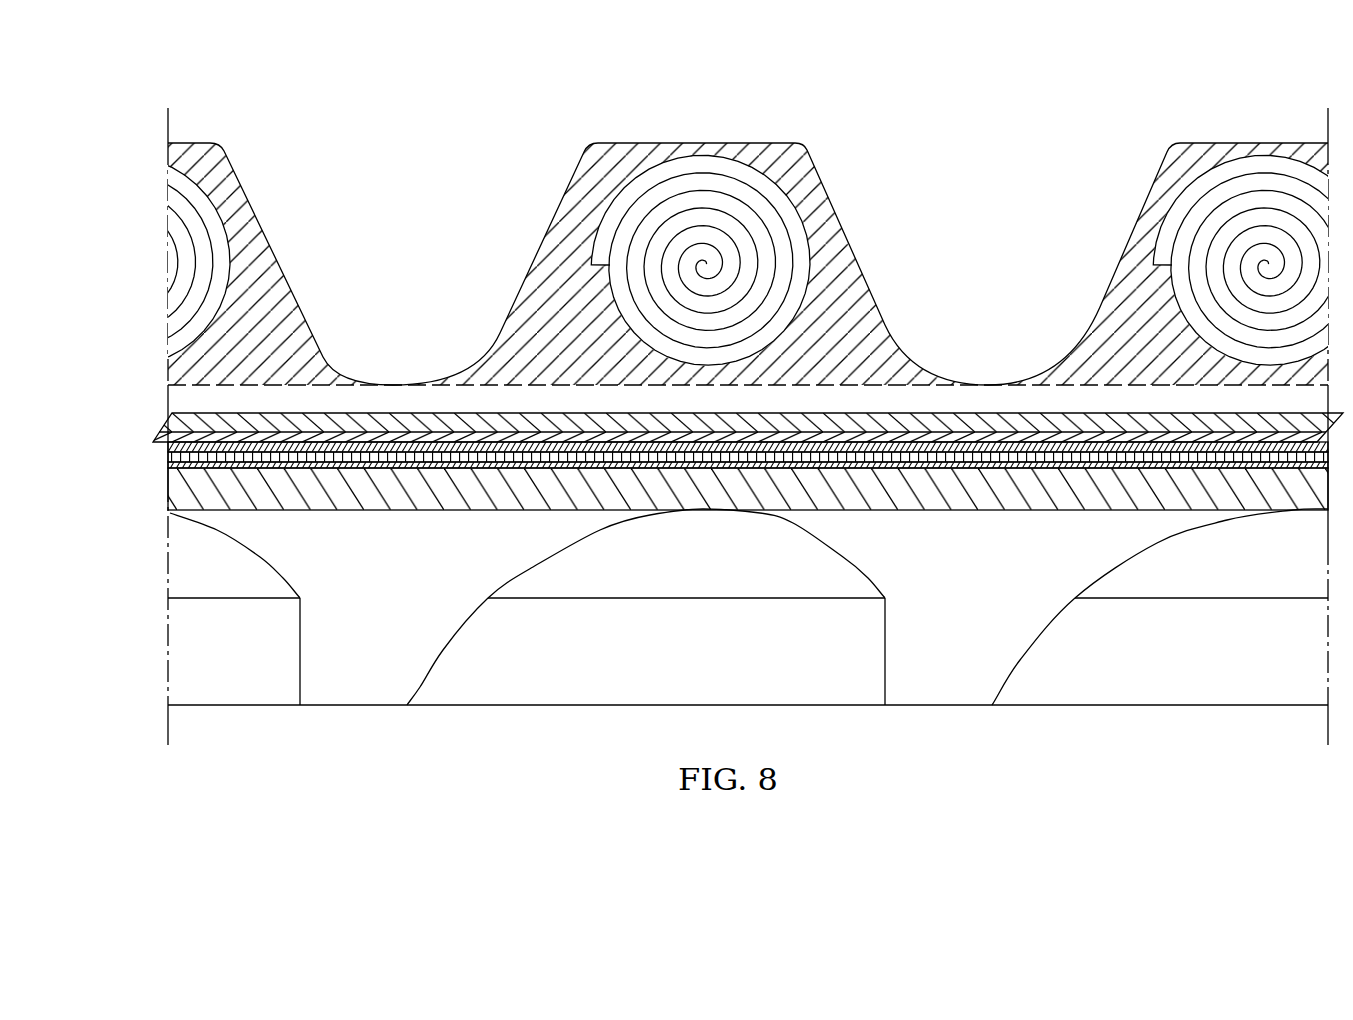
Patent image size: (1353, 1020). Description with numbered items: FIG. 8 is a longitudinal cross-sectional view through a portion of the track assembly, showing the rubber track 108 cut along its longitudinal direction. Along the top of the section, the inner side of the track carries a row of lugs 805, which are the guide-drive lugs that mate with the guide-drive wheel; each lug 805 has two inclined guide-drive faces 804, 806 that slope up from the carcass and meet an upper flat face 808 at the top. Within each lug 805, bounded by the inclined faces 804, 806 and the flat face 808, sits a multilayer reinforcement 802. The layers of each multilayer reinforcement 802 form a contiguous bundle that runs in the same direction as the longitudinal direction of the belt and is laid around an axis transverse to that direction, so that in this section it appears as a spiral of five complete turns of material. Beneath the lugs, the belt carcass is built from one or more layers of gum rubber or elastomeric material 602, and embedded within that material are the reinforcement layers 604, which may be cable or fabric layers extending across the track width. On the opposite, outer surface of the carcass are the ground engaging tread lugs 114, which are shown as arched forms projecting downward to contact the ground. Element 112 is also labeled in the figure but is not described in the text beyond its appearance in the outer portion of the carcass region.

The rubber track 108 is at (121, 151).
The upper flat face 808 is at (700, 143).
The lug 805 is at (762, 131).
The inclined guide-drive face 804 is at (562, 188).
The inclined guide-drive face 806 is at (816, 170).
The multilayer reinforcement 802 is at (813, 250).
The reinforcement layer 604 is at (408, 402).
The gum rubber or elastomeric material 602 is at (342, 518).
The arch member 112 is at (703, 511).
The ground engaging tread lug 114 is at (368, 716).